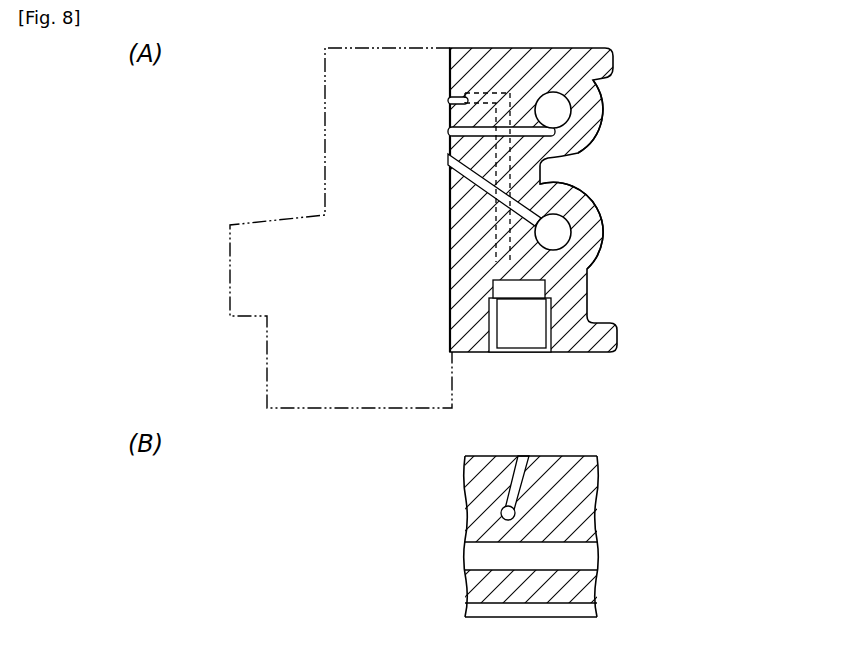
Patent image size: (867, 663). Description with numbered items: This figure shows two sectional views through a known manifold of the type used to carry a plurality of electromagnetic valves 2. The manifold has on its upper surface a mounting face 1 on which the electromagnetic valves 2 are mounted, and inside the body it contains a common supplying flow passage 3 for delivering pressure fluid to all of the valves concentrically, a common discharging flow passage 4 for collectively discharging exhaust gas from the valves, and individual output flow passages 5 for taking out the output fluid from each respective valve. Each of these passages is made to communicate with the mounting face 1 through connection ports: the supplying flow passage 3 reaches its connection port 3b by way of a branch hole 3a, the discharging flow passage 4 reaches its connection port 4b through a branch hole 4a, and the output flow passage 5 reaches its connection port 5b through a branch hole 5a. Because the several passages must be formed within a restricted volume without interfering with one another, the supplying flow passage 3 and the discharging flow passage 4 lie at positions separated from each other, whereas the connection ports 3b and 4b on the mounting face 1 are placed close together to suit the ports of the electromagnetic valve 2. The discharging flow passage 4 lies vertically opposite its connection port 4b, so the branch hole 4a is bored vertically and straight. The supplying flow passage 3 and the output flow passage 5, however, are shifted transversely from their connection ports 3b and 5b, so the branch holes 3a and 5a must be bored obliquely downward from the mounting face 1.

The mounting face 1 is at (453, 328).
The electromagnetic valve 2 is at (262, 243).
The supplying flow passage 3 is at (562, 235).
The branch hole 3a is at (548, 197).
The connection port for supply 3b is at (452, 165).
The discharging flow passage 4 is at (560, 112).
The branch hole 4a is at (560, 158).
The connection port for discharge 4b is at (452, 132).
The output flow passage 5 is at (510, 262).
The branch hole 5a is at (490, 97).
The connection port for output 5b is at (450, 100).